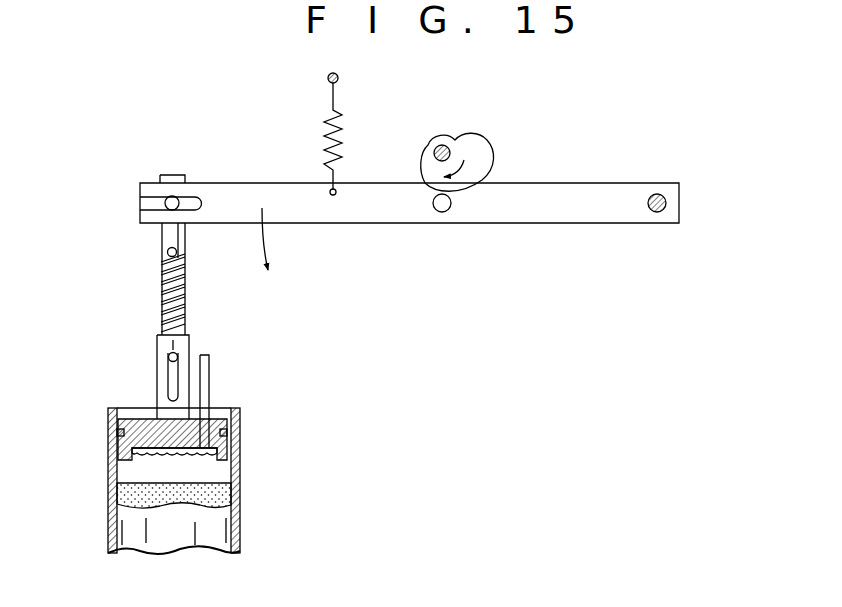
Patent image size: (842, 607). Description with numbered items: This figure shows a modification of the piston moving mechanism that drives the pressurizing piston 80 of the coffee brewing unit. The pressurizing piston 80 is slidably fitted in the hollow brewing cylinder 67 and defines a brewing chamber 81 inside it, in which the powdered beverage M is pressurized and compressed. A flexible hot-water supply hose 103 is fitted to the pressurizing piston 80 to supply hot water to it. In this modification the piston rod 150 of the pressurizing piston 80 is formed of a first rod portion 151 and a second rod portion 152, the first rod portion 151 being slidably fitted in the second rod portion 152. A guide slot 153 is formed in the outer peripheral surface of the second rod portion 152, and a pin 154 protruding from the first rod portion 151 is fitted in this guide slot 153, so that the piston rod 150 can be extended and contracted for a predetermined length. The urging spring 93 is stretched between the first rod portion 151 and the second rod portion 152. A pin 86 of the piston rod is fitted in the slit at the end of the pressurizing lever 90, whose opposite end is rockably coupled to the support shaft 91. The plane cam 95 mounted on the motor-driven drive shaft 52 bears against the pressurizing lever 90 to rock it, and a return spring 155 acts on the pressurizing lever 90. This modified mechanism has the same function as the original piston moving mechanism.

The pressurizing lever 90 is at (547, 216).
The pin 86 is at (178, 199).
The return spring 155 is at (341, 128).
The drive shaft 52 is at (442, 145).
The plane cam 95 is at (486, 152).
The support shaft 91 is at (657, 194).
The piston rod 150 is at (156, 268).
The first rod portion 151 is at (178, 253).
The urging spring 93 is at (160, 301).
The second rod portion 152 is at (157, 345).
The pin 154 is at (178, 357).
The guide slot 153 is at (168, 383).
The hot-water supply hose 103 is at (209, 378).
The brewing cylinder 67 is at (234, 437).
The pressurizing piston 80 is at (122, 444).
The brewing chamber 81 is at (222, 473).
The powdered beverage M is at (116, 499).